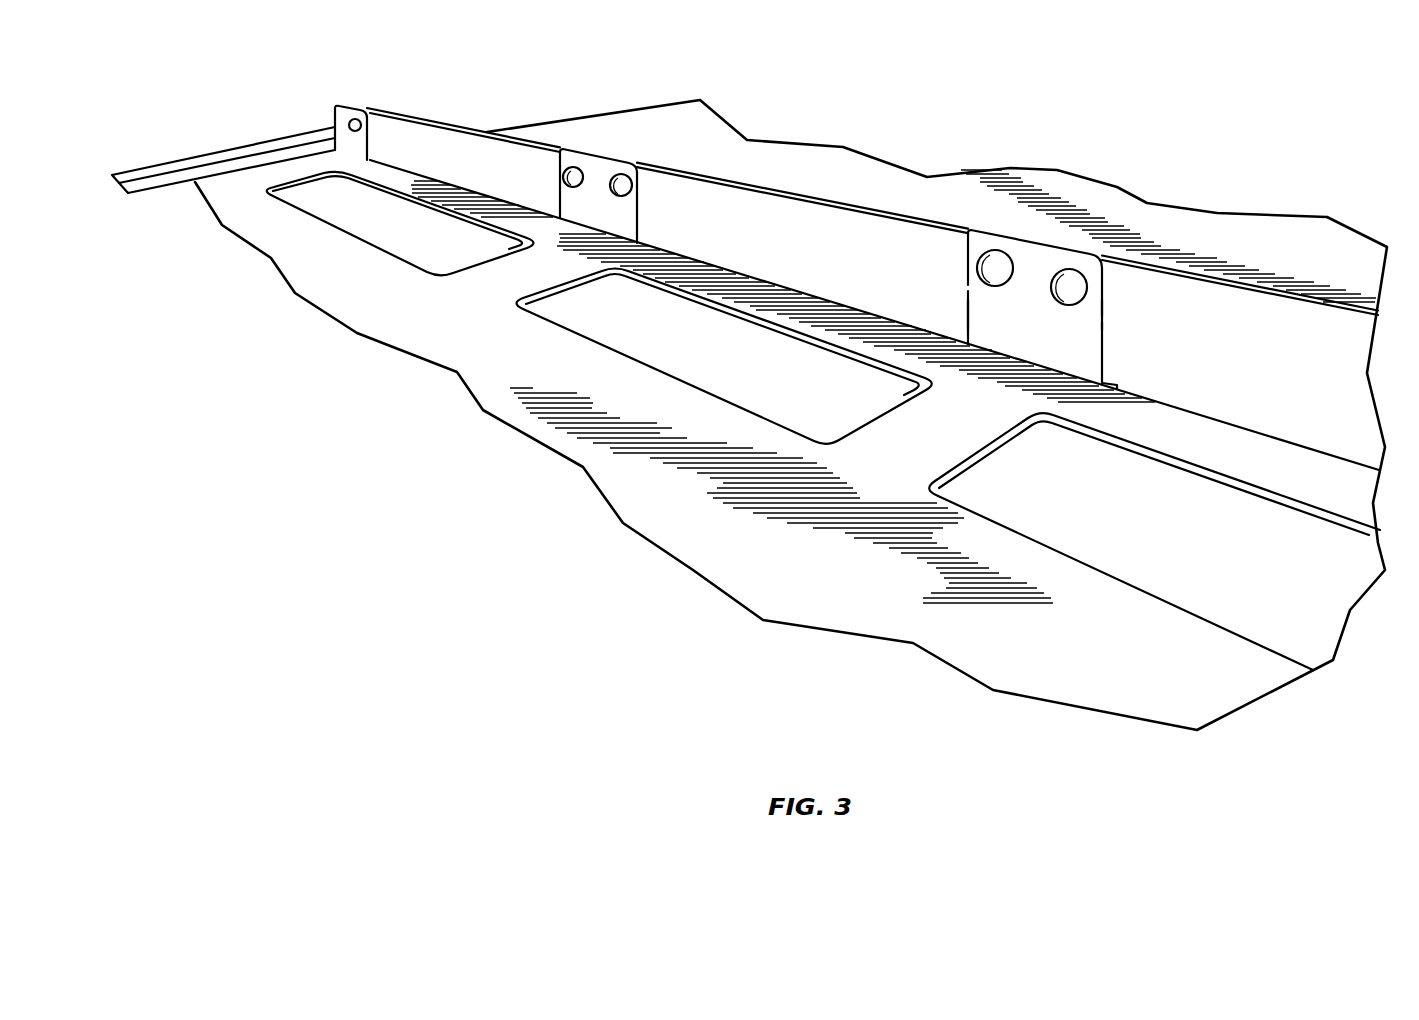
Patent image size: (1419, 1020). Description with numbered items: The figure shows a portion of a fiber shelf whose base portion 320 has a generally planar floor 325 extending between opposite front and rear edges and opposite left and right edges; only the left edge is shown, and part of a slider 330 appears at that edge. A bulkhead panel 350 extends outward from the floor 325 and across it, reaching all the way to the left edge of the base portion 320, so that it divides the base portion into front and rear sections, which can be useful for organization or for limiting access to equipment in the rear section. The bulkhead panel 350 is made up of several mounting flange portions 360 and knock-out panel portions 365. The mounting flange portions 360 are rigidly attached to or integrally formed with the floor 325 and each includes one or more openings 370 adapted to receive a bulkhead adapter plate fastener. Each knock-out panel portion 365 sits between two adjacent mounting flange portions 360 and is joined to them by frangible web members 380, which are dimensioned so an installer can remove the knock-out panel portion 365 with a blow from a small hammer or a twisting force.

The base portion 320 is at (216, 294).
The floor 325 is at (450, 347).
The slider 330 is at (207, 150).
The bulkhead panel 350 is at (312, 108).
The mounting flange portions 360 is at (340, 127).
The knock-out panel portions 365 is at (458, 166).
The openings 370 is at (1072, 287).
The frangible web members 380 is at (965, 287).